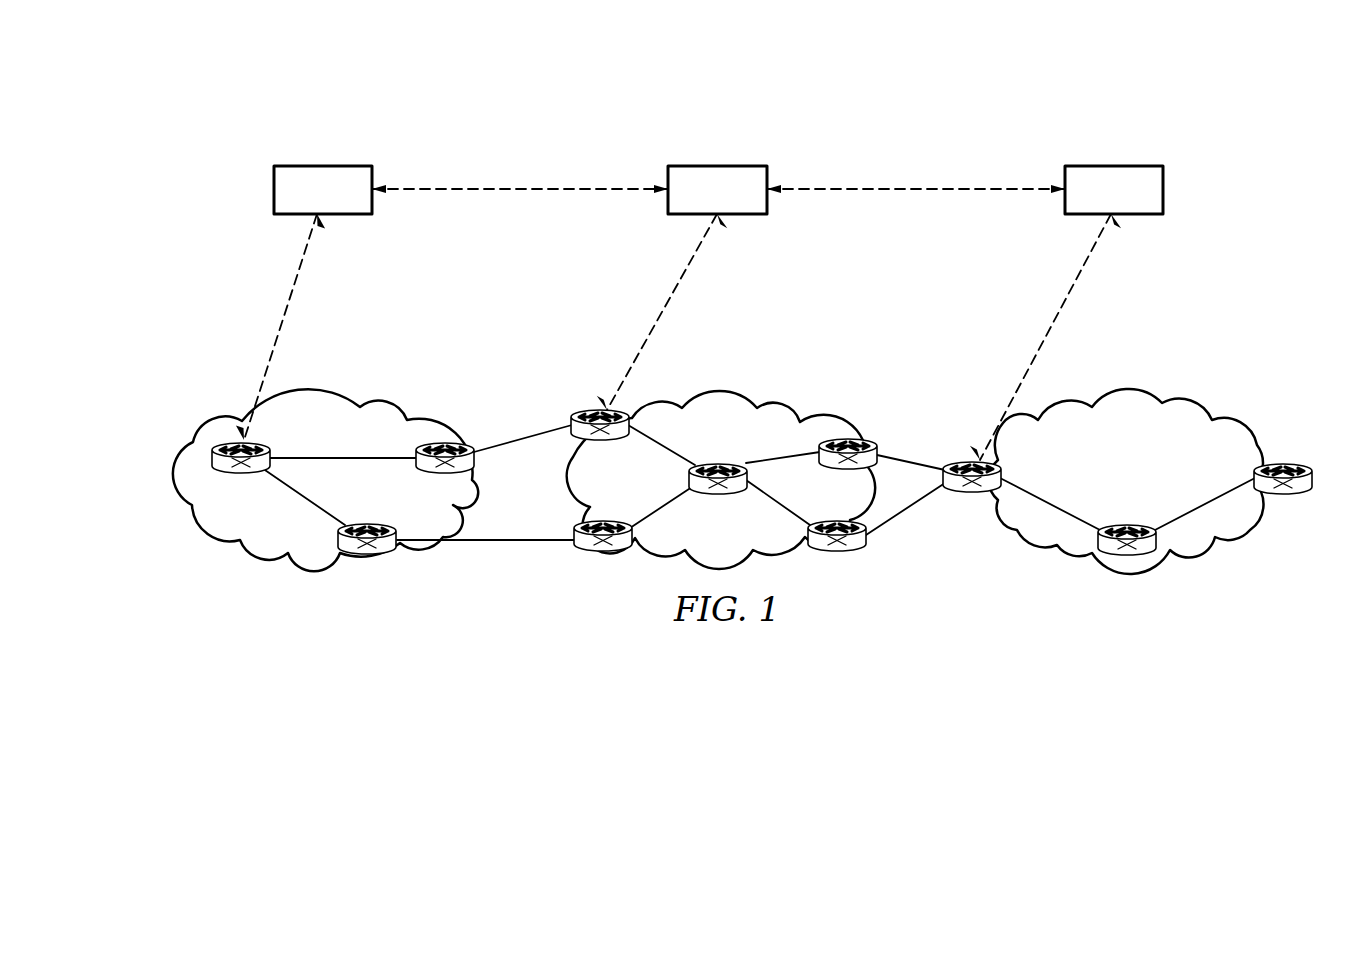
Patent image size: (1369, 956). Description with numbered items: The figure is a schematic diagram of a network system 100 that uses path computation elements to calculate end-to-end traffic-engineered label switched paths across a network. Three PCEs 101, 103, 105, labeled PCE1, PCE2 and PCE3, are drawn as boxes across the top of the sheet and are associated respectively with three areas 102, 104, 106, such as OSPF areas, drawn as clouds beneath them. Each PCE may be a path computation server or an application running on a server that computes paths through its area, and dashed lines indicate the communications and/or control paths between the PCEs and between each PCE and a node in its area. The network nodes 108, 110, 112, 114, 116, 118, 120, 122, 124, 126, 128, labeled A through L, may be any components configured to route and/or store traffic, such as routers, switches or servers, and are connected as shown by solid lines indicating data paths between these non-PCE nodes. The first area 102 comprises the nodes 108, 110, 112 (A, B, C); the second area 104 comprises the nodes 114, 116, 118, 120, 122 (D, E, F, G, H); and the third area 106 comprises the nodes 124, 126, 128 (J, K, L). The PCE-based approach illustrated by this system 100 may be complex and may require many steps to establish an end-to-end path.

The network system 100 is at (186, 72).
The PCE 101 is at (320, 166).
The PCE 103 is at (714, 166).
The PCE 105 is at (1110, 166).
The area 102 is at (327, 396).
The area 104 is at (722, 394).
The area 106 is at (1131, 394).
The network node 108 is at (263, 444).
The network node 110 is at (389, 526).
The network node 112 is at (423, 444).
The network node 114 is at (578, 410).
The network node 116 is at (600, 520).
The network node 118 is at (715, 464).
The network node 120 is at (873, 441).
The network node 122 is at (857, 554).
The network node 124 is at (969, 495).
The network node 126 is at (1116, 522).
The network node 128 is at (1287, 502).